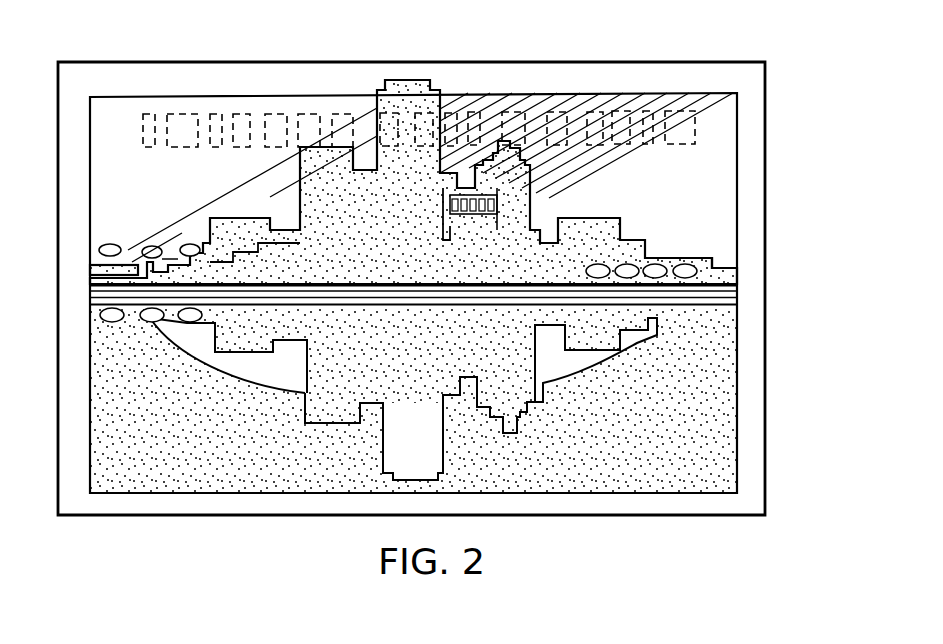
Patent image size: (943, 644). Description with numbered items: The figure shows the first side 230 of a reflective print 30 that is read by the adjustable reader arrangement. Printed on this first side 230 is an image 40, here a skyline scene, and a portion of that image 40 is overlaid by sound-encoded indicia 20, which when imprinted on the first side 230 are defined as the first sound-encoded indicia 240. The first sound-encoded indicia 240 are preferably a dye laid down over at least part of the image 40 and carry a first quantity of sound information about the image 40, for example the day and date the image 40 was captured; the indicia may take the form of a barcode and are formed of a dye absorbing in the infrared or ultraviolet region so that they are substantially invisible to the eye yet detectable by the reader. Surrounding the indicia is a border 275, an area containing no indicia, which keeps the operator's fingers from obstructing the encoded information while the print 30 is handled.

The sound-encoded indicia 20 is at (685, 112).
The reflective print 30 is at (723, 152).
The image 40 is at (728, 198).
The first side 230 is at (727, 245).
The first sound-encoded indicia 240 is at (612, 118).
The border 275 is at (758, 327).